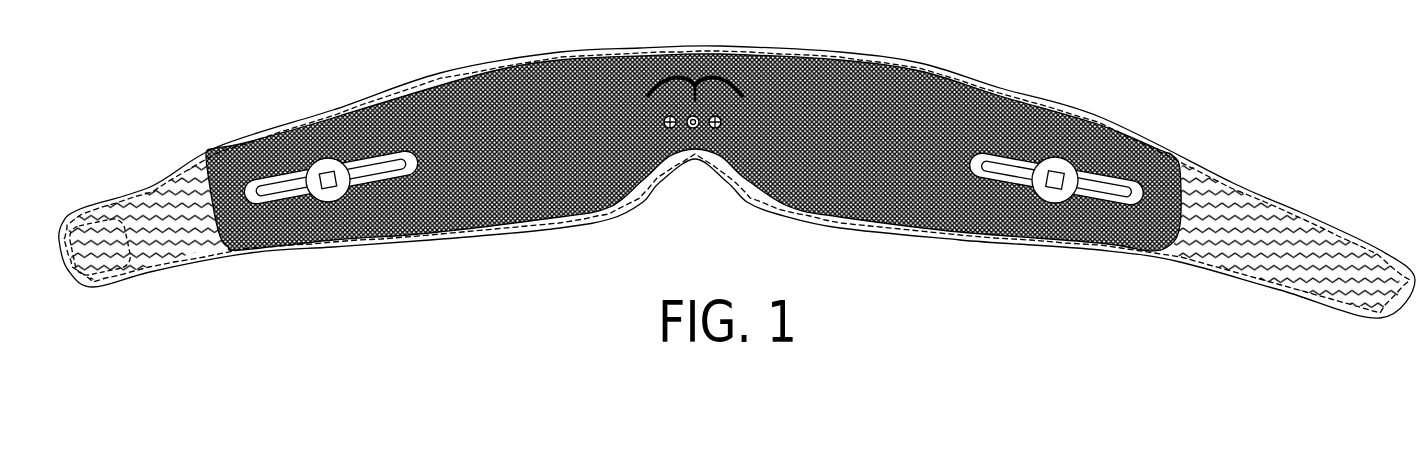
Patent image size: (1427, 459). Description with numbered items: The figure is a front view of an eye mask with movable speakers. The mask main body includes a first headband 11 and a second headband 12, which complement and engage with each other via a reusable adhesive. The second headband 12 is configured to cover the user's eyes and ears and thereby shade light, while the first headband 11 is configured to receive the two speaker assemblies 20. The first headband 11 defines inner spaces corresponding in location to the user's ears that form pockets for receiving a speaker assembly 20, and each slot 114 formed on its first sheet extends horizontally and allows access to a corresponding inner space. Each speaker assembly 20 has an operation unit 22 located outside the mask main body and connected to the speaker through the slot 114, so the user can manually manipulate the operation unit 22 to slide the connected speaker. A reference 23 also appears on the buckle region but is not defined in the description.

The first headband 11 is at (487, 97).
The second headband 12 is at (143, 217).
The slot 114 is at (346, 173).
The speaker assembly 20 is at (1070, 207).
The operation unit 22 is at (1043, 197).
The buckle ring 23 is at (1067, 167).